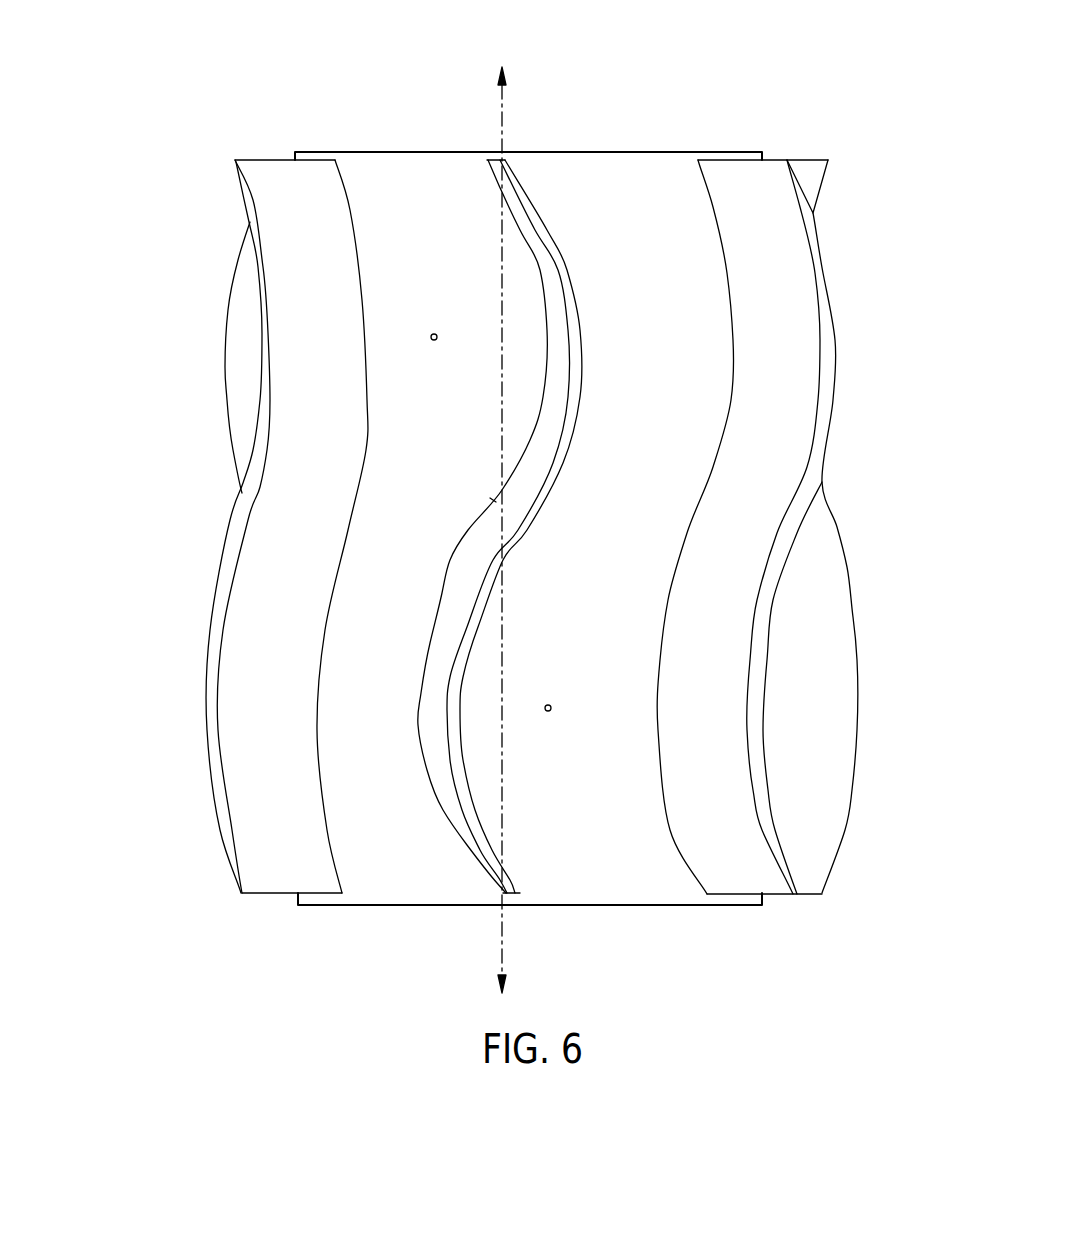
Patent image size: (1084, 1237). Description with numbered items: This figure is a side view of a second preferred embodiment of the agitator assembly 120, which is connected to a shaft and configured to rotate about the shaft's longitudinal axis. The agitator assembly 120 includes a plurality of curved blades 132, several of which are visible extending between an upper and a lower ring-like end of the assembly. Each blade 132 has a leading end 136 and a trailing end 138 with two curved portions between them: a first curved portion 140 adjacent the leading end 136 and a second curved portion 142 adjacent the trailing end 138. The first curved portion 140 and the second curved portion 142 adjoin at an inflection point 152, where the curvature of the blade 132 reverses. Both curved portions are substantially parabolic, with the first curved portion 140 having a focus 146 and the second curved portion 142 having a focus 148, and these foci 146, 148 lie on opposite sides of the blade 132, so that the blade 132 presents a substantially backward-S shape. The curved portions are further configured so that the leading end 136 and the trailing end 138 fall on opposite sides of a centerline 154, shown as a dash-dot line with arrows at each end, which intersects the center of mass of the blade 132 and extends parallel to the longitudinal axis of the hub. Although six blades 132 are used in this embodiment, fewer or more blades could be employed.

The agitator assembly 120 is at (742, 74).
The curved blade 132 is at (250, 452).
The leading end 136 is at (300, 893).
The trailing end 138 is at (283, 156).
The first curved portion 140 is at (213, 672).
The second curved portion 142 is at (298, 330).
The focus of first curved portion 146 is at (551, 706).
The focus of second curved portion 148 is at (431, 337).
The inflection point 152 is at (493, 500).
The centerline 154 is at (500, 117).